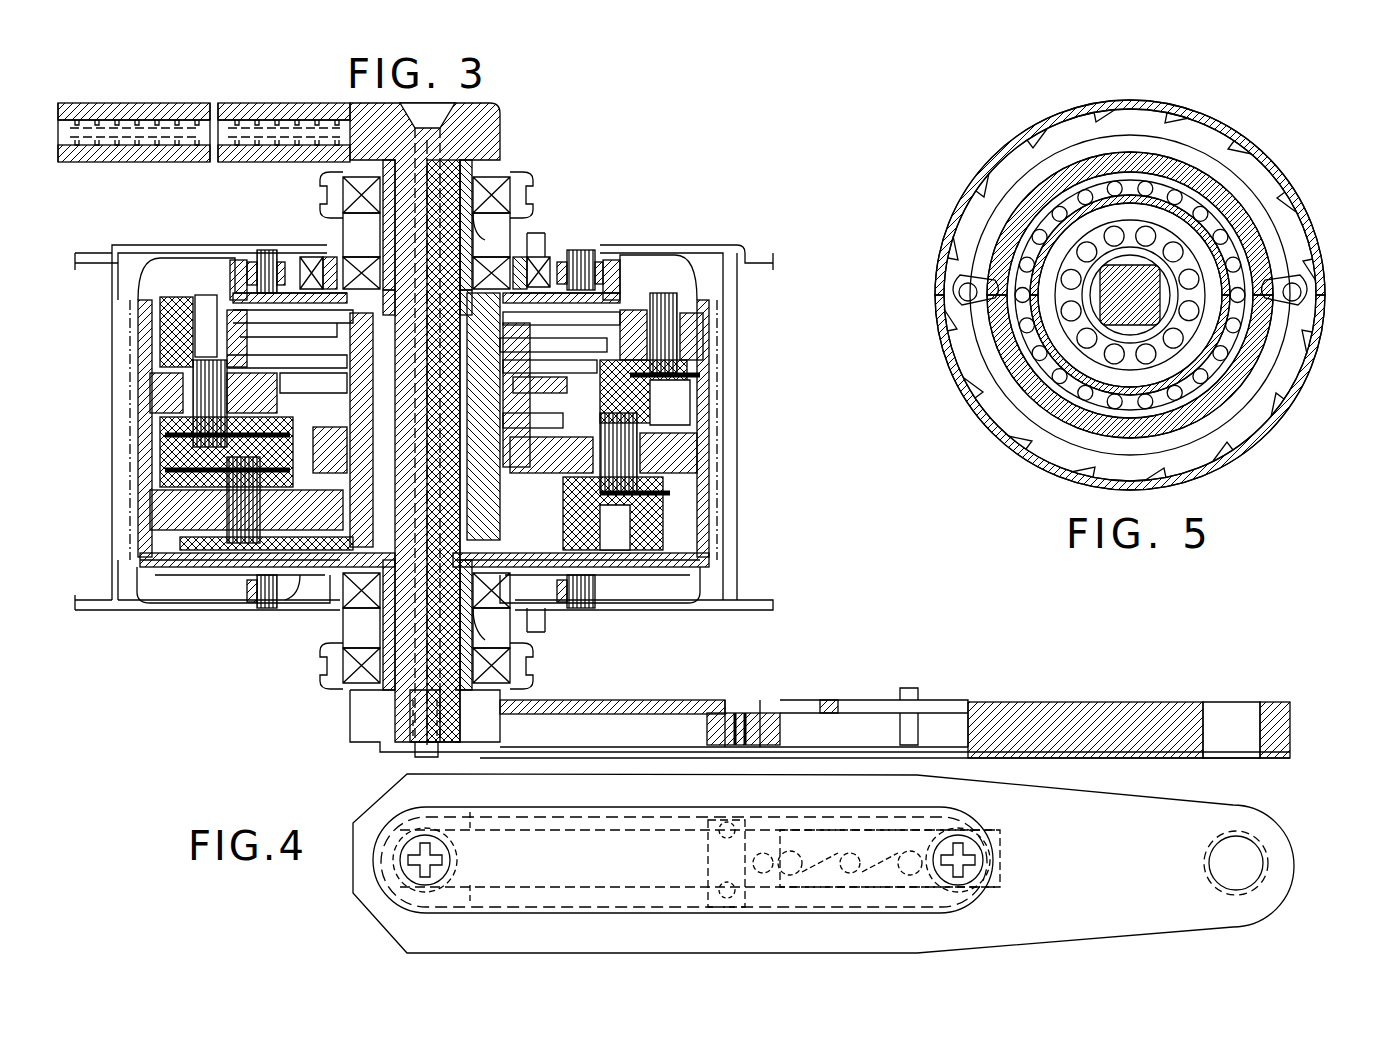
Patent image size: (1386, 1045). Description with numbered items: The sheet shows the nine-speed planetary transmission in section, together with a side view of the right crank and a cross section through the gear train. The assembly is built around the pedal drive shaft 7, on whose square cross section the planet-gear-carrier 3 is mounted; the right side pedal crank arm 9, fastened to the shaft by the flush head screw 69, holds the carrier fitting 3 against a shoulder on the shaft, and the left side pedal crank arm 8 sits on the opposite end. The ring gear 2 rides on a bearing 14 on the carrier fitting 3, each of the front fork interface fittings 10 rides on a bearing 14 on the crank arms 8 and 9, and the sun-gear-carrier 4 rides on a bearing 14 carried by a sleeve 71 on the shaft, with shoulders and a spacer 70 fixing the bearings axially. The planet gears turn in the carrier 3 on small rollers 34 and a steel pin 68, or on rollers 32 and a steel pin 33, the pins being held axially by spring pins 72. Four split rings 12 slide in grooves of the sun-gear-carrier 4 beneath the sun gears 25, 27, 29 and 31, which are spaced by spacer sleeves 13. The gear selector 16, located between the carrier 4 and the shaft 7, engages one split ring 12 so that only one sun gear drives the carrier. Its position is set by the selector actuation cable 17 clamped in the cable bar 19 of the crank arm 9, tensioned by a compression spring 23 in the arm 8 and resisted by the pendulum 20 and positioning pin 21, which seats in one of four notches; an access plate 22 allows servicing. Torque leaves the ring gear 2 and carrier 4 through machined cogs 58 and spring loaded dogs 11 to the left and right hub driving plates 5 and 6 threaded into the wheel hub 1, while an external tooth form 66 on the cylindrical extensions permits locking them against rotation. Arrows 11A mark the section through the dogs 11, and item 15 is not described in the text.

In FIG. 3, the wheel hub 1 is at (742, 292).
In FIG. 3, the ring gear 2 is at (710, 330).
In FIG. 5, the ring gear 2 is at (962, 190).
In FIG. 3, the planet-gear-carrier 3 is at (683, 580).
In FIG. 3, the sun-gear-carrier 4 is at (620, 265).
In FIG. 3, the left side hub driving plate 5 is at (700, 245).
In FIG. 3, the right side hub driving plate 6 is at (183, 270).
In FIG. 5, the right side hub driving plate 6 is at (1010, 405).
In FIG. 3, the pedal drive shaft 7 is at (500, 125).
In FIG. 5, the pedal drive shaft 7 is at (1090, 305).
In FIG. 3, the left side pedal crank arm 8 is at (500, 150).
In FIG. 3, the right side pedal crank arm 9 is at (1010, 700).
In FIG. 4, the right side pedal crank arm 9 is at (1170, 800).
In FIG. 3, the front fork interface fittings 10 is at (533, 190).
In FIG. 3, the spring loaded dogs 11 is at (315, 642).
In FIG. 5, the spring loaded dogs 11 is at (958, 290).
In FIG. 3, the section line 11A is at (330, 218).
In FIG. 3, the split ring 12 is at (528, 518).
In FIG. 3, the spacer sleeves 13 is at (550, 393).
In FIG. 3, the bearing 14 is at (492, 180).
In FIG. 5, the bearing 14 is at (1190, 220).
In FIG. 3, the bearing spring 15 is at (545, 262).
In FIG. 5, the bearing spring 15 is at (1250, 345).
In FIG. 3, the gear selector 16 is at (495, 478).
In FIG. 3, the selector actuation cable 17 is at (590, 712).
In FIG. 3, the cable bar 19 is at (690, 710).
In FIG. 3, the pendulum 20 is at (800, 712).
In FIG. 3, the positioning pin 21 is at (912, 688).
In FIG. 3, the access plate 22 is at (164, 103).
In FIG. 4, the access plate 22 is at (395, 768).
In FIG. 3, the compression spring 23 is at (170, 162).
In FIG. 3, the sun gear 25 is at (403, 331).
In FIG. 3, the sun gear 27 is at (358, 392).
In FIG. 3, the sun gear 29 is at (322, 434).
In FIG. 3, the sun gear 31 is at (338, 488).
In FIG. 3, the rollers 32 is at (680, 445).
In FIG. 3, the steel pin 33 is at (640, 512).
In FIG. 3, the small rollers 34 is at (703, 345).
In FIG. 5, the machined cogs 58 is at (1150, 120).
In FIG. 3, the external tooth form 66 is at (527, 240).
In FIG. 3, the steel pin 68 is at (690, 395).
In FIG. 3, the flush head screw 69 is at (438, 757).
In FIG. 4, the flush head screw 69 is at (400, 868).
In FIG. 3, the spacer 70 is at (490, 624).
In FIG. 3, the sleeve 71 is at (491, 231).
In FIG. 3, the spring pins 72 is at (700, 376).